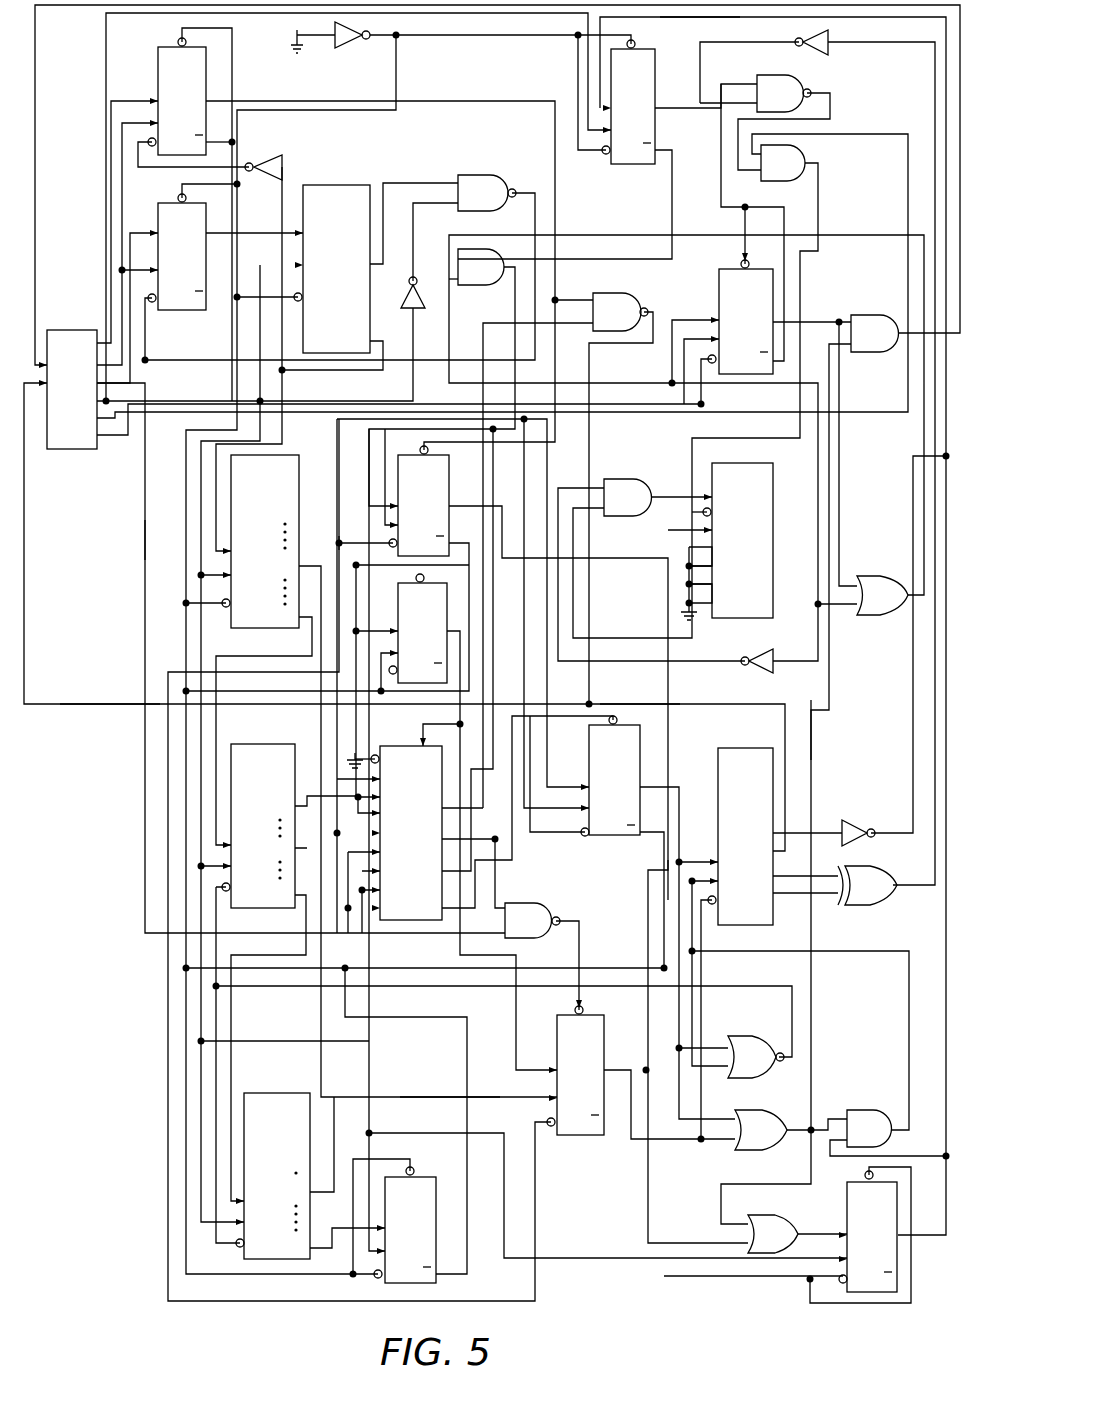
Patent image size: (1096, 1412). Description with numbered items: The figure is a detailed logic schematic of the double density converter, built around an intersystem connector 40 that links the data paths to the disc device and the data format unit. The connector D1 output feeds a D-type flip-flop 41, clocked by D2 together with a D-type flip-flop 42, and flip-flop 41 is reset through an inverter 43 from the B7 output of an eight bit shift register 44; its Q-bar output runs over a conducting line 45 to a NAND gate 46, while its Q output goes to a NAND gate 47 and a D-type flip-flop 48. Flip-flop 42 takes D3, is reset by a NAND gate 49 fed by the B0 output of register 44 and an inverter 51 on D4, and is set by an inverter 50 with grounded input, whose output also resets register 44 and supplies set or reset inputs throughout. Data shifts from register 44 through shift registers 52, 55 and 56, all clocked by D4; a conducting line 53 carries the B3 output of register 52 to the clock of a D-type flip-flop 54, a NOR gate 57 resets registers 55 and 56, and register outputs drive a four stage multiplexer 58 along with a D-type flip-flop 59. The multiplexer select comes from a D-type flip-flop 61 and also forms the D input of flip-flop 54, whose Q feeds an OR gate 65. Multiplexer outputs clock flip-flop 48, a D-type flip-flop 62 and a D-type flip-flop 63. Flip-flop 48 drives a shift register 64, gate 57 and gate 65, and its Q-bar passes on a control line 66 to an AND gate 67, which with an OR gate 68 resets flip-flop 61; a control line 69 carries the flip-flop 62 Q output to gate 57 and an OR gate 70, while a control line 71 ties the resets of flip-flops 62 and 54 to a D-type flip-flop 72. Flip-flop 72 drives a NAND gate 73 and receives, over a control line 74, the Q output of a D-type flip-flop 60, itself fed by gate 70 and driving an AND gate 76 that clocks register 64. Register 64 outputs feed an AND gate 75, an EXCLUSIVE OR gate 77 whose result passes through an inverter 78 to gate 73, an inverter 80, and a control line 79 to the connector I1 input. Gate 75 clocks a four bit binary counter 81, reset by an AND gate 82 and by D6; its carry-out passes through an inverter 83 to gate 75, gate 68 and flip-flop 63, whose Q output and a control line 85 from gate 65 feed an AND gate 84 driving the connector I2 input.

The intersystem connector 40 is at (76, 330).
The D-type flip-flop 41 is at (158, 62).
The D-type flip-flop 42 is at (165, 200).
The inverter 43 is at (276, 165).
The shift register 44 is at (362, 185).
The conducting line 45 is at (146, 550).
The NAND gate 46 is at (543, 903).
The NAND gate 47 is at (645, 292).
The D-type flip-flop 48 is at (589, 762).
The NAND gate 49 is at (485, 176).
The inverter 50 is at (345, 42).
The inverter 51 is at (420, 310).
The shift register 52 is at (299, 484).
The conducting line 53 is at (444, 1096).
The D-type flip-flop 54 is at (604, 1040).
The shift register 55 is at (256, 744).
The shift register 56 is at (300, 1093).
The NOR gate 57 is at (764, 1036).
The multiplexer 58 is at (392, 746).
The D-type flip-flop 59 is at (440, 1186).
The D-type flip-flop 60 is at (847, 1204).
The D-type flip-flop 61 is at (450, 590).
The D-type flip-flop 62 is at (449, 495).
The D-type flip-flop 63 is at (722, 266).
The shift register 64 is at (730, 748).
The OR gate 65 is at (750, 1110).
The control line 66 is at (654, 695).
The AND gate 67 is at (490, 287).
The OR gate 68 is at (882, 576).
The control line 69 is at (648, 888).
The OR gate 70 is at (766, 1216).
The control line 71 is at (336, 543).
The D-type flip-flop 72 is at (656, 82).
The NAND gate 73 is at (778, 75).
The control line 74 is at (703, 18).
The AND gate 75 is at (640, 517).
The AND gate 76 is at (858, 1110).
The EXCLUSIVE OR gate 77 is at (870, 867).
The inverter 78 is at (828, 48).
The control line 79 is at (120, 702).
The inverter 80 is at (876, 813).
The binary counter 81 is at (774, 516).
The AND gate 82 is at (802, 156).
The inverter 83 is at (772, 652).
The AND gate 84 is at (878, 314).
The control line 85 is at (820, 706).